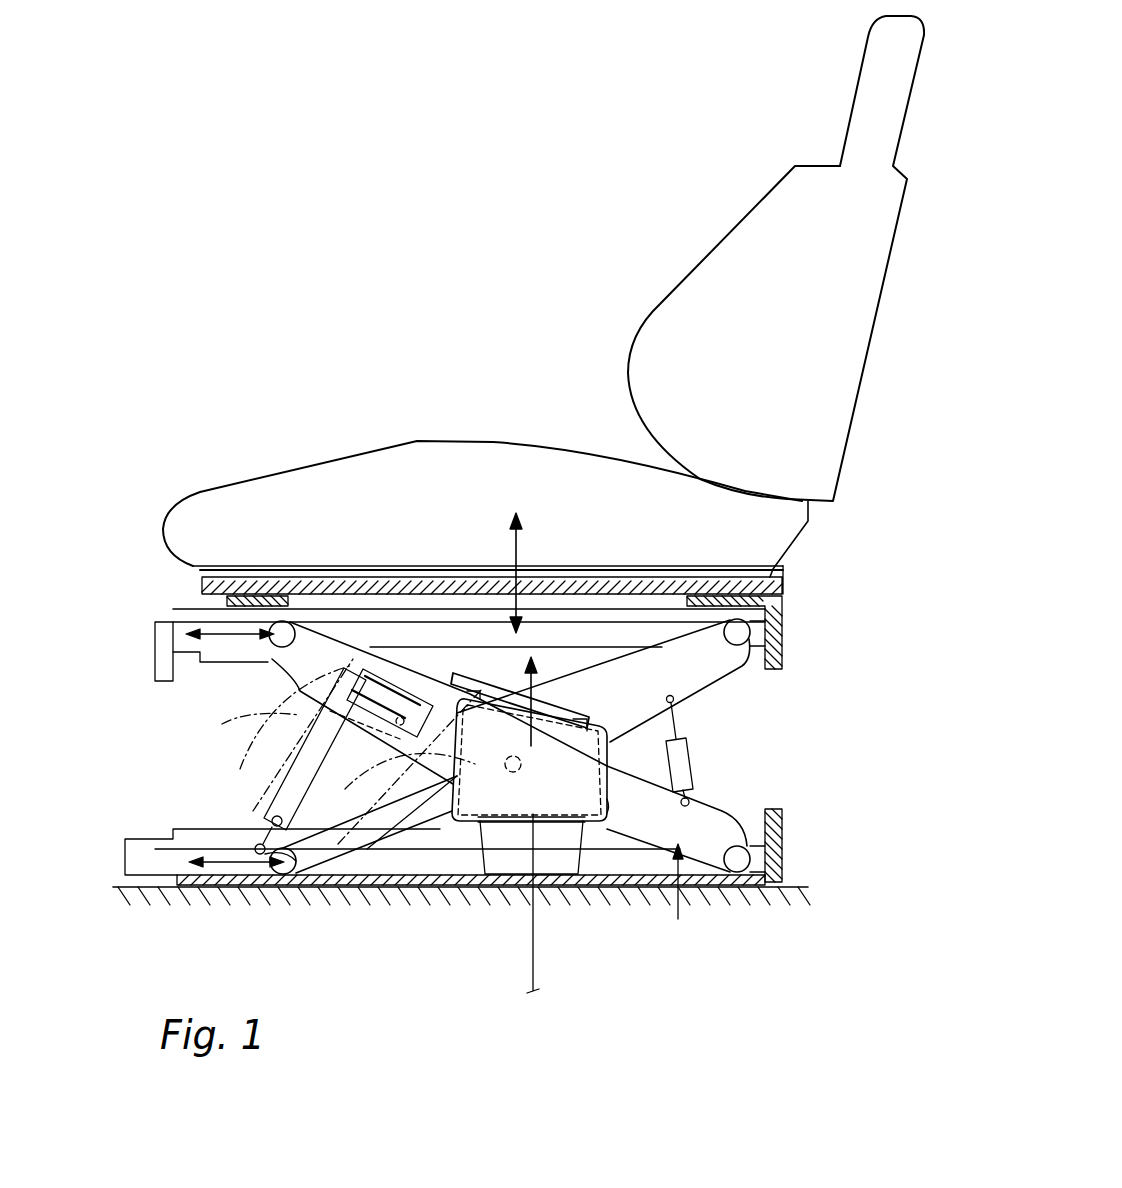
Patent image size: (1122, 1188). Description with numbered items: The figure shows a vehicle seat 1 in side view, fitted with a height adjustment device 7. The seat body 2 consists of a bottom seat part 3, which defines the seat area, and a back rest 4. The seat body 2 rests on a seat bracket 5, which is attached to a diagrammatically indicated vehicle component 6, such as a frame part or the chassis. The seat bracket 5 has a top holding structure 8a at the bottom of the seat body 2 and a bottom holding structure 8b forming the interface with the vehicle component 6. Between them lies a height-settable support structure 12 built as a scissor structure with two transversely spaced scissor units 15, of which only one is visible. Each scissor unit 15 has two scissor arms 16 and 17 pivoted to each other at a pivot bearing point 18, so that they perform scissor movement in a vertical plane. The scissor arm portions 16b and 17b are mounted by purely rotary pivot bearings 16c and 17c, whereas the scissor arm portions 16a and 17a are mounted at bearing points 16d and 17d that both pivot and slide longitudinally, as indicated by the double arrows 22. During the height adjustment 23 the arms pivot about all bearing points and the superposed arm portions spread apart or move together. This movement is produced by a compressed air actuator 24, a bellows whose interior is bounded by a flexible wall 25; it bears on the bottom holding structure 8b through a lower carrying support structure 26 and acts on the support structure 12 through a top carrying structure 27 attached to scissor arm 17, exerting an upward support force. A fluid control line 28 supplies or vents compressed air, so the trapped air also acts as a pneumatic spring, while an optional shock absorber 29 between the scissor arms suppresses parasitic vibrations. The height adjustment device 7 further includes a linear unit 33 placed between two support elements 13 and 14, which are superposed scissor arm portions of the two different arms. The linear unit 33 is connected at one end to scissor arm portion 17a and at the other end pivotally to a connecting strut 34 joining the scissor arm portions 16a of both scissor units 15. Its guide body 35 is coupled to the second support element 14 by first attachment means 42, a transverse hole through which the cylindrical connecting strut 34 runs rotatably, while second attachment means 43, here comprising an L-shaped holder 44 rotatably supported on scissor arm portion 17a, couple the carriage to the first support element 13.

The vehicle seat 1 is at (524, 332).
The seat body 2 is at (806, 442).
The bottom seat part 3 is at (225, 510).
The back rest 4 is at (853, 317).
The seat bracket 5 is at (184, 748).
The vehicle component 6 is at (755, 890).
The height adjustment device 7 is at (346, 632).
The top holding structure 8a is at (257, 593).
The bottom holding structure 8b is at (215, 887).
The support structure 12 is at (777, 742).
The first support element 13 is at (313, 637).
The second support element 14 is at (347, 837).
The scissor unit 15 is at (680, 896).
The scissor arm 16 is at (452, 832).
The scissor arm portion 16a is at (370, 824).
The scissor arm portion 16b is at (707, 667).
The pivot bearing 16c is at (743, 632).
The bearing point 16d is at (284, 878).
The scissor arm 17 is at (403, 637).
The scissor arm portion 17a is at (439, 703).
The scissor arm portion 17b is at (717, 817).
The pivot bearing 17c is at (743, 858).
The bearing point 17d is at (262, 660).
The pivot bearing point 18 is at (523, 765).
The double arrows 22 is at (230, 633).
The height adjustment 23 is at (516, 550).
The compressed air actuator 24 is at (555, 840).
The flexible wall 25 is at (610, 800).
The lower carrying support structure 26 is at (513, 860).
The top carrying structure 27 is at (548, 697).
The fluid control line 28 is at (537, 965).
The shock absorber 29 is at (684, 760).
The linear unit 33 is at (288, 768).
The connecting strut 34 is at (257, 810).
The guide body 35 is at (307, 787).
The first attachment means 42 is at (310, 870).
The second attachment means 43 is at (330, 712).
The holder 44 is at (440, 637).